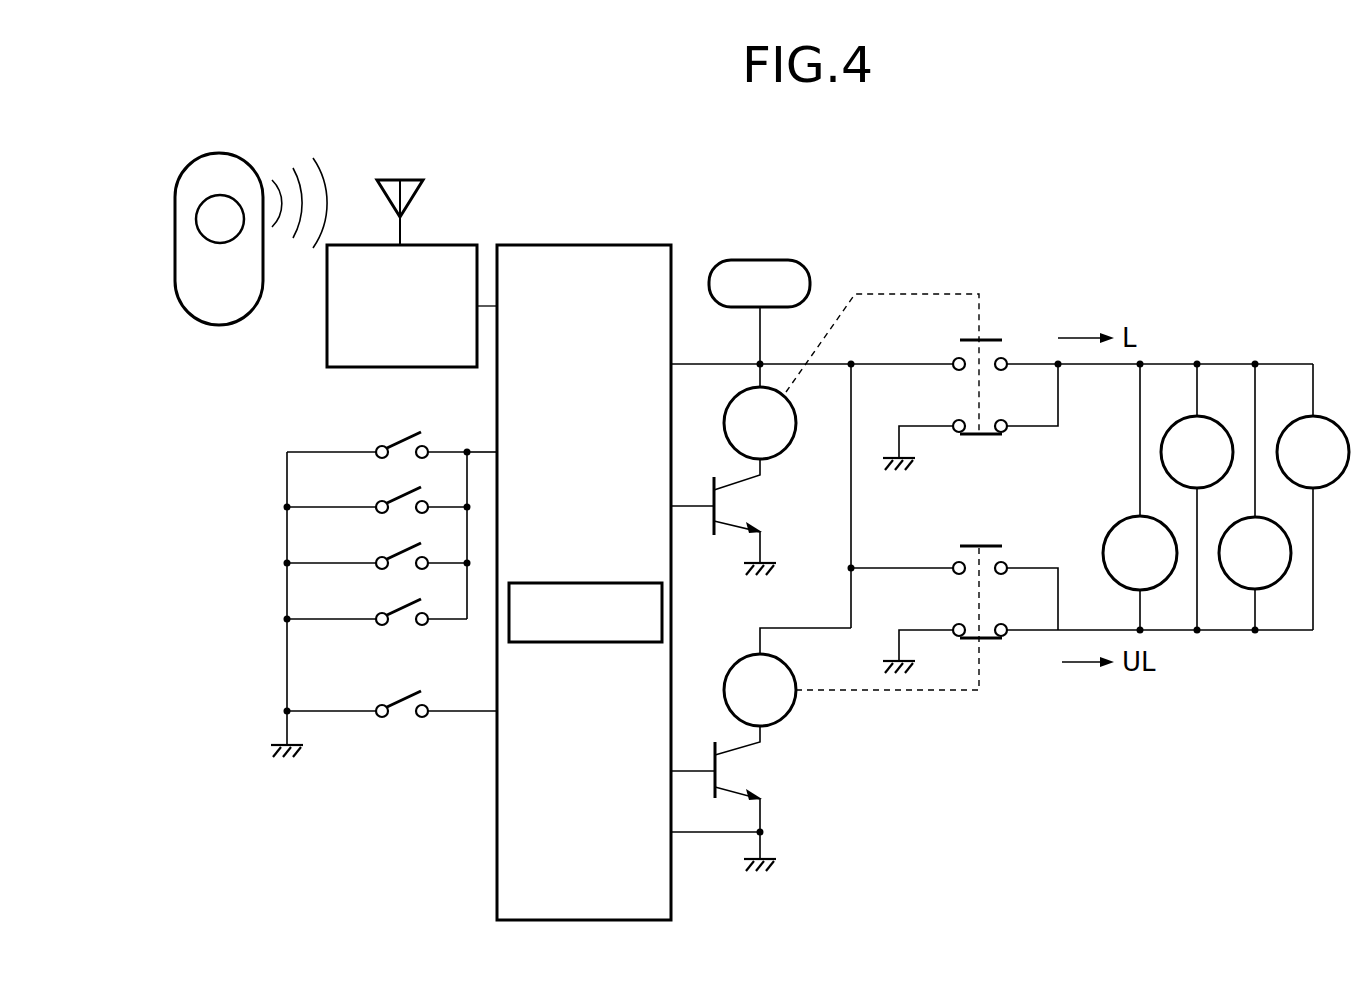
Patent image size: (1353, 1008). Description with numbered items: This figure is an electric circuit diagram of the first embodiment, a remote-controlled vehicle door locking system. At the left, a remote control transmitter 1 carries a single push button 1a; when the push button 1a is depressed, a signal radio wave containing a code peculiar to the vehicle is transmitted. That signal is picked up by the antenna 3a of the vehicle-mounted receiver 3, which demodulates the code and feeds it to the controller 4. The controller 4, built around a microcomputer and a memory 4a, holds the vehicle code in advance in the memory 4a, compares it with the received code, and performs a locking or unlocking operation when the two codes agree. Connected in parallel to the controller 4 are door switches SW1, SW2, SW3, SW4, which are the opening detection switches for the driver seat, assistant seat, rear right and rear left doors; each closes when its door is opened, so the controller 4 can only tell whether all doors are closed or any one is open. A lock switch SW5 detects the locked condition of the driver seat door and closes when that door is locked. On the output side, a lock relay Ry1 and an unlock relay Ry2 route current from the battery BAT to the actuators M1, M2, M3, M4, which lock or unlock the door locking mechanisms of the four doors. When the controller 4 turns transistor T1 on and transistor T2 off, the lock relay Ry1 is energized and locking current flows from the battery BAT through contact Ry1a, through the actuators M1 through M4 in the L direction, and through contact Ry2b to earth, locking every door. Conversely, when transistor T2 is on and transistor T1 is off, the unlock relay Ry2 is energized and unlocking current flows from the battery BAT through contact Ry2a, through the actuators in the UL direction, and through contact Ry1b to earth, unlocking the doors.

The remote control transmitter 1 is at (250, 162).
The push button 1a is at (196, 219).
The receiver 3 is at (430, 245).
The antenna 3a is at (397, 178).
The controller 4 is at (632, 245).
The memory 4a is at (608, 583).
The door switch SW1 is at (377, 440).
The door switch SW2 is at (377, 495).
The door switch SW3 is at (377, 551).
The door switch SW4 is at (377, 607).
The lock switch SW5 is at (392, 699).
The battery BAT is at (759, 323).
The lock relay Ry1 is at (851, 376).
The unlock relay Ry2 is at (851, 637).
The contact of lock relay Ry1a is at (1005, 337).
The contact of lock relay Ry1b is at (970, 419).
The contact of unlock relay Ry2a is at (1005, 570).
The contact of unlock relay Ry2b is at (970, 651).
The transistor T1 is at (732, 517).
The transistor T2 is at (732, 798).
The actuator M1 is at (1140, 497).
The actuator M2 is at (1197, 497).
The actuator M3 is at (1255, 497).
The actuator M4 is at (1313, 497).